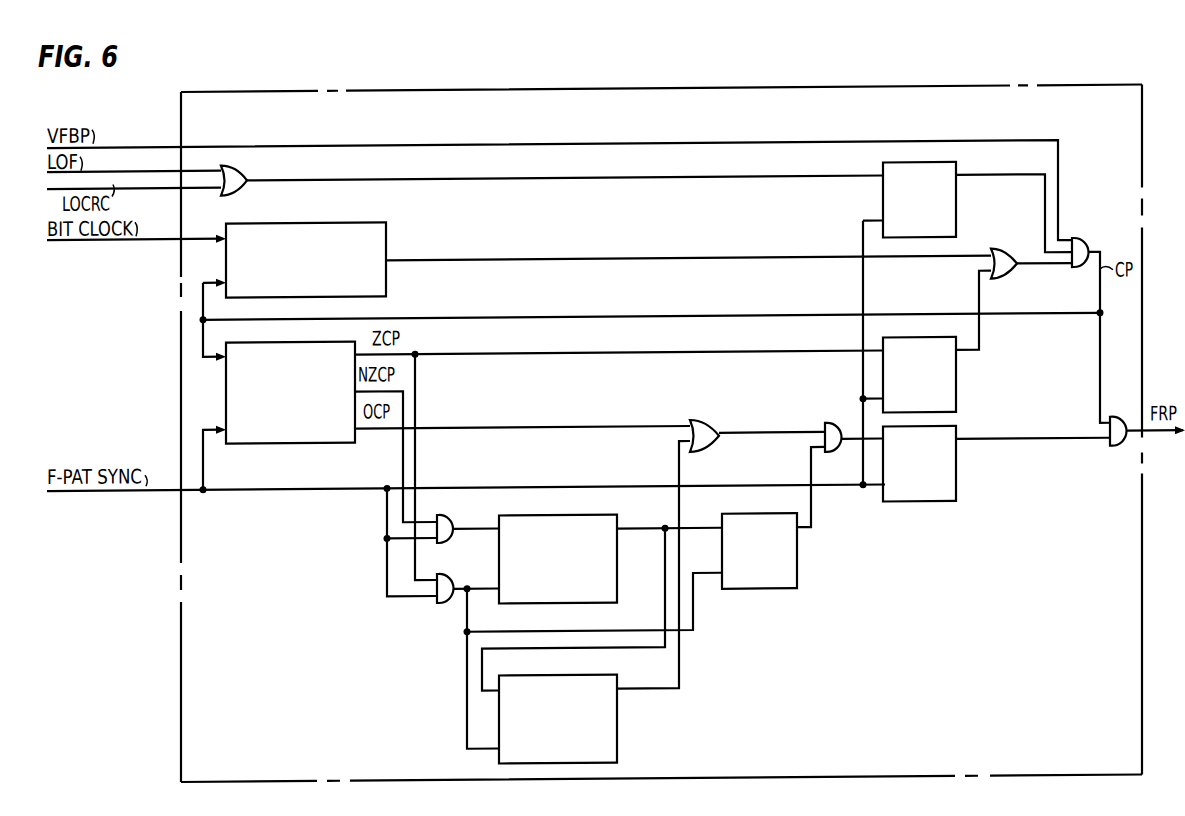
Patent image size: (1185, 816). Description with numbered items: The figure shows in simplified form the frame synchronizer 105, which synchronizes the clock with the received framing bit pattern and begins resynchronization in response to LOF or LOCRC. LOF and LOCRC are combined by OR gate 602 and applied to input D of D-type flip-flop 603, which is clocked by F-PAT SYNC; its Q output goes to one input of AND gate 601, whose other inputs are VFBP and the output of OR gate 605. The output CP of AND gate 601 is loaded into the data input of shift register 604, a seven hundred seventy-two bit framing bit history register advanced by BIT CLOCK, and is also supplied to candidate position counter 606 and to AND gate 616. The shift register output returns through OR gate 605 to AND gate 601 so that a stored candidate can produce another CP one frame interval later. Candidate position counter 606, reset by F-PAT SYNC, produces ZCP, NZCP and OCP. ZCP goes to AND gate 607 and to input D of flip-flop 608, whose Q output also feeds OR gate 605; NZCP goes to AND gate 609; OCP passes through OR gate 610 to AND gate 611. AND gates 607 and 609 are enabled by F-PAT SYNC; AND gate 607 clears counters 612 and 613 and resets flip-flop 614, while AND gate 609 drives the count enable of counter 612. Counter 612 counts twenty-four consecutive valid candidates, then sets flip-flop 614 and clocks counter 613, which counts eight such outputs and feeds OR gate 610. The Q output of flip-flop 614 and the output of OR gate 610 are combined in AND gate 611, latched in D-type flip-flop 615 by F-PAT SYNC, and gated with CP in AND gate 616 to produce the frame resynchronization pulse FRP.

The frame synchronizer 105 is at (1065, 92).
The AND gate 601 is at (1080, 245).
The OR gate 602 is at (241, 168).
The D-type flip-flop 603 is at (957, 172).
The shift register 604 is at (338, 224).
The OR gate 605 is at (1000, 255).
The candidate position counter 606 is at (281, 444).
The AND gate 607 is at (441, 576).
The D-type flip-flop 608 is at (957, 391).
The AND gate 609 is at (441, 517).
The OR gate 610 is at (699, 424).
The AND gate 611 is at (831, 428).
The counter 612 is at (619, 518).
The counter 613 is at (618, 734).
The flip-flop 614 is at (798, 580).
The D-type flip-flop 615 is at (957, 486).
The AND gate 616 is at (1118, 453).